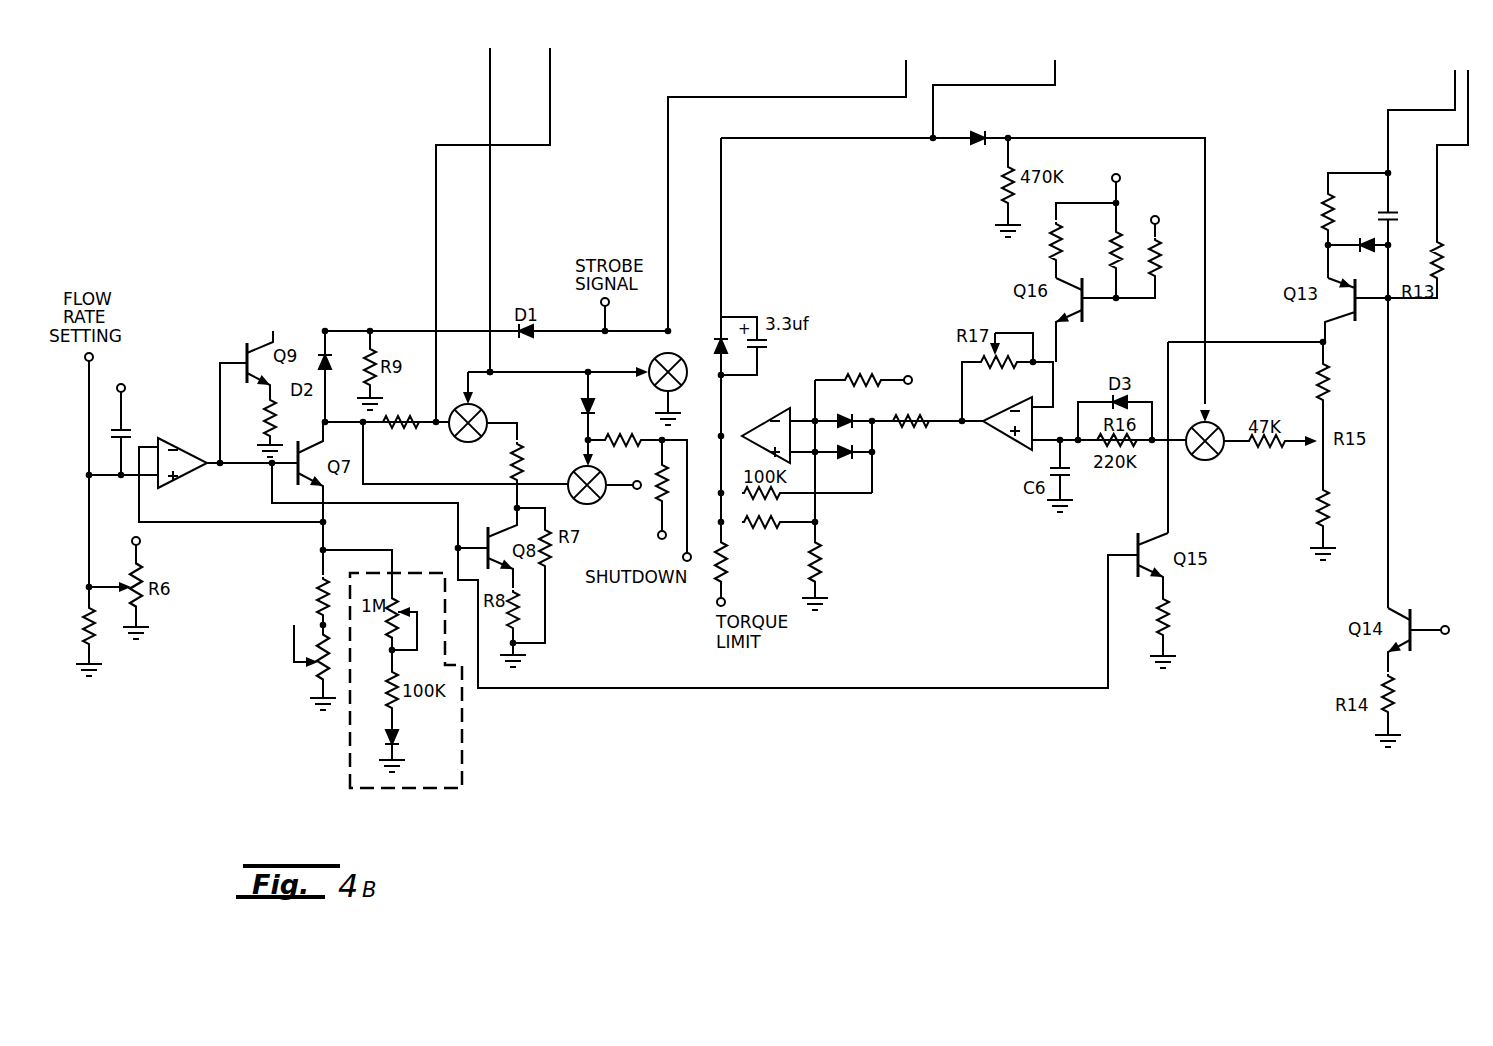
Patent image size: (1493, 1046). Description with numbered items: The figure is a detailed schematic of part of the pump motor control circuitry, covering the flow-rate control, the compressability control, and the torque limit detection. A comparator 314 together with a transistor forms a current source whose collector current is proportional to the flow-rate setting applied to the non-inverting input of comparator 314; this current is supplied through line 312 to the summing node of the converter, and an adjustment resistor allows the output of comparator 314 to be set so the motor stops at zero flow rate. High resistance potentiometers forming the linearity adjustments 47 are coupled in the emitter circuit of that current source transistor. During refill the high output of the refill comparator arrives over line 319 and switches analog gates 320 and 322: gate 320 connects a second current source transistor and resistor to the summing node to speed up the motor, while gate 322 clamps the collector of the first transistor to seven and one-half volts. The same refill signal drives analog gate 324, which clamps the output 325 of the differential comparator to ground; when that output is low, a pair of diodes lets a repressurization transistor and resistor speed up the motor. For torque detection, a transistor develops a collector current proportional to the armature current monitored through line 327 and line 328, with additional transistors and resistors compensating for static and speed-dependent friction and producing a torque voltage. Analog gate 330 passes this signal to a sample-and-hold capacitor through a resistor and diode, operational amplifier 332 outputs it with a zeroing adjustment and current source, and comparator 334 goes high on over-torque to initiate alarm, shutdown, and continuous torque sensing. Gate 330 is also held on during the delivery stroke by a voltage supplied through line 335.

The comparator 314 is at (168, 440).
The line 319 is at (490, 105).
The line 312 is at (551, 110).
The analog gate 320 is at (486, 413).
The analog gate 322 is at (590, 506).
The analog gate 324 is at (651, 367).
The output 325 is at (905, 82).
The line 335 is at (1056, 80).
The line 327 is at (1456, 86).
The signal line 328 is at (1466, 127).
The analog gate 330 is at (1207, 459).
The operational amplifier 332 is at (996, 428).
The comparator 334 is at (765, 421).
The linearity adjustments 47 is at (458, 741).